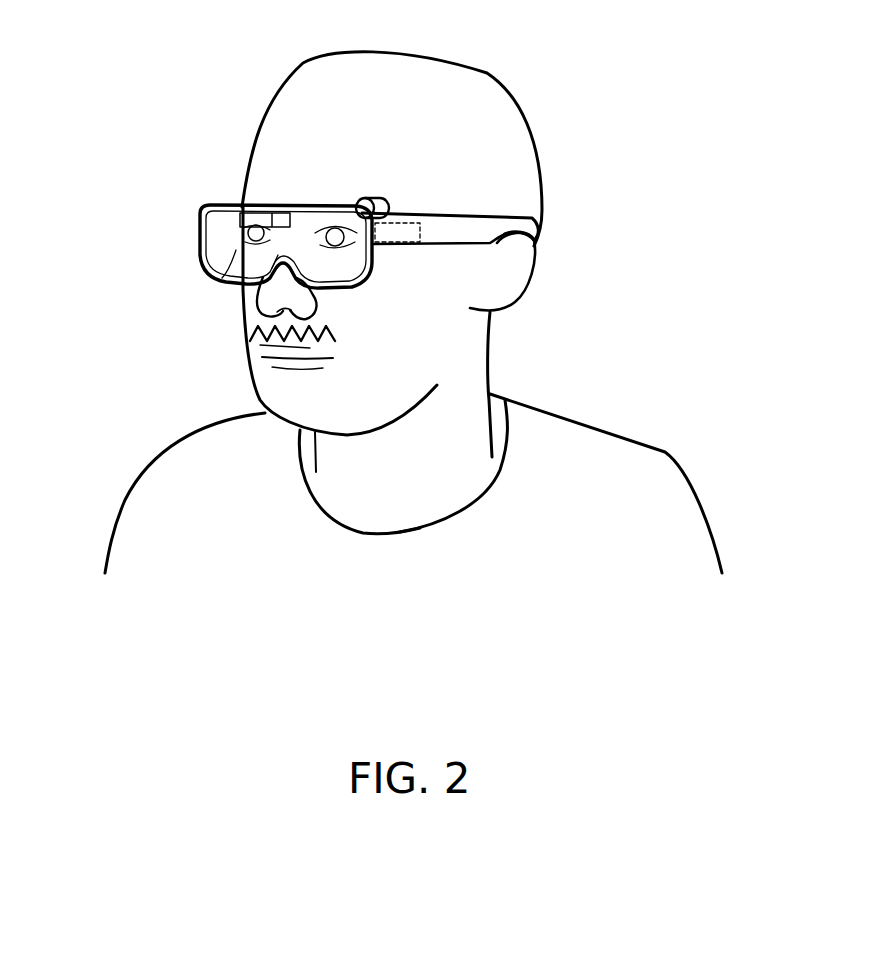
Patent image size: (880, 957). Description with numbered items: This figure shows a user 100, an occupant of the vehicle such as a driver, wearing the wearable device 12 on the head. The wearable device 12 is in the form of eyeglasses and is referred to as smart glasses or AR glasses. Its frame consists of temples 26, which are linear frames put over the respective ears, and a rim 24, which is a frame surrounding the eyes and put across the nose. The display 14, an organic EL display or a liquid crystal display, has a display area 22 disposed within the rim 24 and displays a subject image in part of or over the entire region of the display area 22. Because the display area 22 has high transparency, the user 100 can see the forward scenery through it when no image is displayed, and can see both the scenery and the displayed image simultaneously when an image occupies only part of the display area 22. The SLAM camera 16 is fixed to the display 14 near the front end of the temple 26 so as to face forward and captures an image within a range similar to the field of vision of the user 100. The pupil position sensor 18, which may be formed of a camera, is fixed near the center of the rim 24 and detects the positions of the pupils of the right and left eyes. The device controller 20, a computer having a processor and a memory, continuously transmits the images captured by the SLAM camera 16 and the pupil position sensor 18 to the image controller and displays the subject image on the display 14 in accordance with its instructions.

The user 100 is at (665, 452).
The wearable device 12 is at (330, 218).
The display 14 is at (216, 251).
The display area 22 is at (228, 279).
The SLAM camera 16 is at (375, 196).
The pupil position sensor 18 is at (280, 208).
The device controller 20 is at (420, 232).
The rim 24 is at (216, 220).
The temples 26 is at (481, 254).